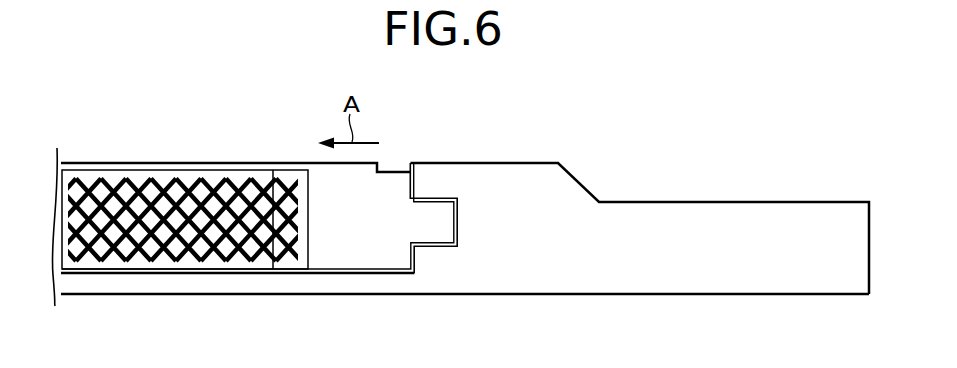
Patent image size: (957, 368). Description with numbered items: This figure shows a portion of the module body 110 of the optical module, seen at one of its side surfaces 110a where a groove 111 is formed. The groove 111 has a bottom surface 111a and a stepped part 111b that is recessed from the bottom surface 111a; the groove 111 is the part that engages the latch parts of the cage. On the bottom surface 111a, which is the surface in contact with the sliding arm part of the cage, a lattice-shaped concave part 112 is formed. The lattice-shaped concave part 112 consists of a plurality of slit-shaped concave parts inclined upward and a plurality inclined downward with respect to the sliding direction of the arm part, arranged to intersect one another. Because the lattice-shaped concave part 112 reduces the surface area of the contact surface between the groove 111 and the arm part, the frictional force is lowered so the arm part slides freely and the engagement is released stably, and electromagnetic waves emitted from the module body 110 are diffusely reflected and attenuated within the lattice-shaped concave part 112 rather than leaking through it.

The module body 110 is at (491, 158).
The side surfaces 110a is at (550, 285).
The groove 111 is at (228, 280).
The bottom surface 111a is at (140, 262).
The stepped part 111b is at (369, 255).
The lattice-shaped concave part 112 is at (165, 200).